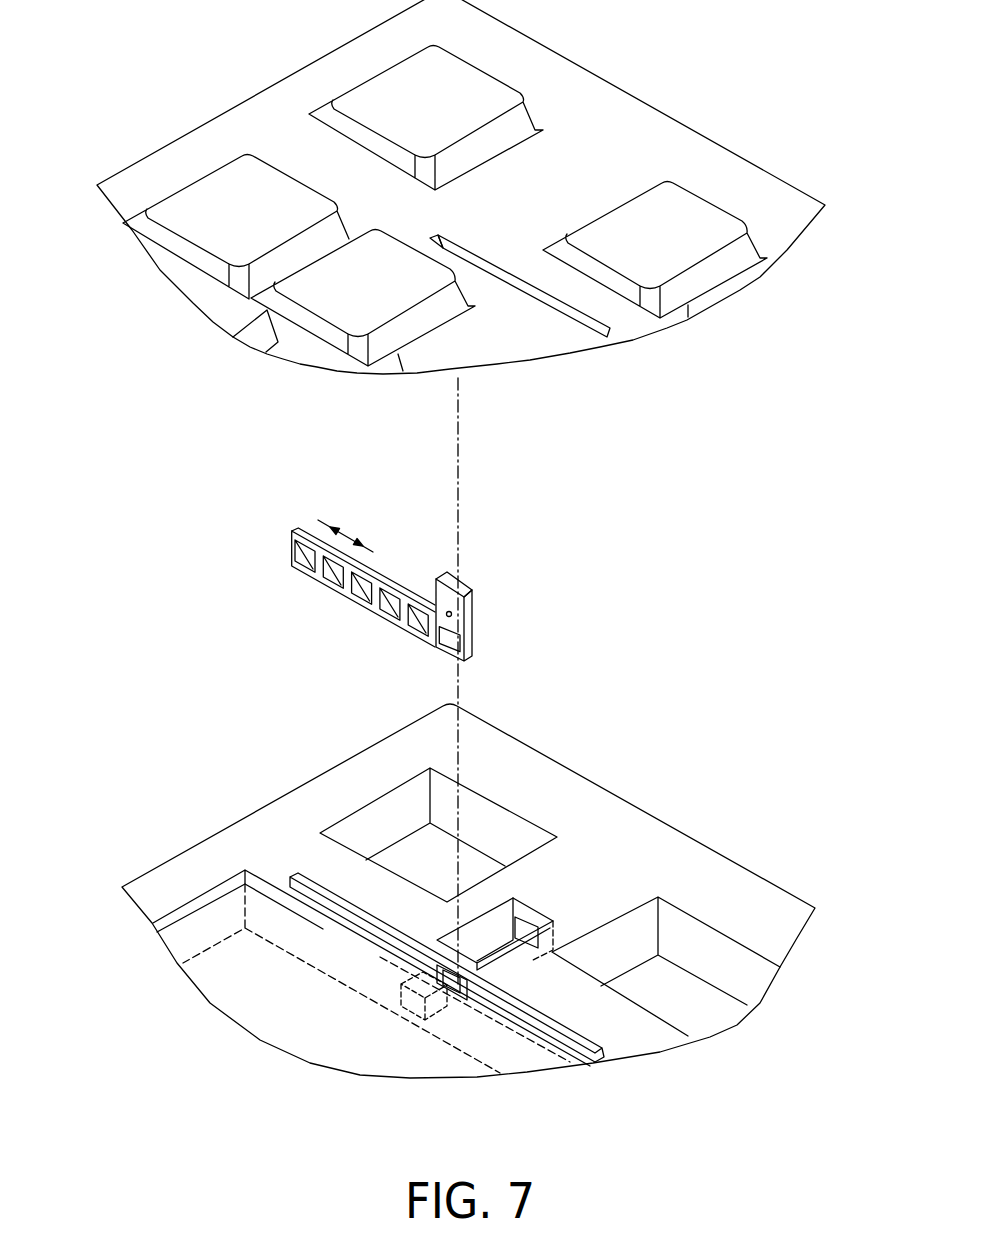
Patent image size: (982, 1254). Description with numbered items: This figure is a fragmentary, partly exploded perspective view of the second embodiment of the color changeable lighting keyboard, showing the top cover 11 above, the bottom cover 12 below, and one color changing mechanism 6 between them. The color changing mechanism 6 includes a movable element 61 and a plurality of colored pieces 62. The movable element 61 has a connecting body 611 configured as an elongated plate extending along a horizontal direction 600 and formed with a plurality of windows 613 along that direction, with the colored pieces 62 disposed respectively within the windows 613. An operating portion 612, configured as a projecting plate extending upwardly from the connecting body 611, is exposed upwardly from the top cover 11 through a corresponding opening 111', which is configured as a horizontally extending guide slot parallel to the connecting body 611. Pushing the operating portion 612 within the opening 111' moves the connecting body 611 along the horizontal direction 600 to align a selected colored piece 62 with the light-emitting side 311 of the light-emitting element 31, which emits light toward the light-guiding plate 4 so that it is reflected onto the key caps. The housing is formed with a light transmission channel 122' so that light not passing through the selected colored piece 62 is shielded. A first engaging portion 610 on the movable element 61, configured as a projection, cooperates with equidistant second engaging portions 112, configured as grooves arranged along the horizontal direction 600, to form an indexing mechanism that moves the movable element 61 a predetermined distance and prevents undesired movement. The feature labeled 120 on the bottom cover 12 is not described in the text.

The top cover 11 is at (683, 122).
The opening 111' is at (524, 265).
The second engaging portions 112 is at (468, 265).
The color changing mechanism 6 is at (397, 547).
The horizontal direction 600 is at (347, 536).
The movable element 61 is at (480, 623).
The first engaging portion 610 is at (447, 617).
The connecting body 611 is at (473, 648).
The operating portion 612 is at (473, 598).
The windows 613 is at (388, 612).
The colored pieces 62 is at (330, 580).
The bottom cover 12 is at (658, 820).
The guide rail 120 is at (585, 1035).
The light transmission channel 122' is at (379, 1044).
The light-guiding plate 4 is at (200, 905).
The light-emitting element 31 is at (532, 928).
The light-emitting side 311 is at (506, 931).